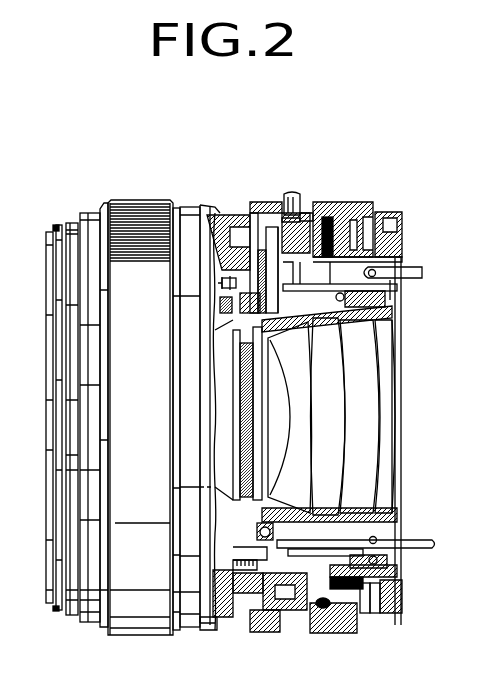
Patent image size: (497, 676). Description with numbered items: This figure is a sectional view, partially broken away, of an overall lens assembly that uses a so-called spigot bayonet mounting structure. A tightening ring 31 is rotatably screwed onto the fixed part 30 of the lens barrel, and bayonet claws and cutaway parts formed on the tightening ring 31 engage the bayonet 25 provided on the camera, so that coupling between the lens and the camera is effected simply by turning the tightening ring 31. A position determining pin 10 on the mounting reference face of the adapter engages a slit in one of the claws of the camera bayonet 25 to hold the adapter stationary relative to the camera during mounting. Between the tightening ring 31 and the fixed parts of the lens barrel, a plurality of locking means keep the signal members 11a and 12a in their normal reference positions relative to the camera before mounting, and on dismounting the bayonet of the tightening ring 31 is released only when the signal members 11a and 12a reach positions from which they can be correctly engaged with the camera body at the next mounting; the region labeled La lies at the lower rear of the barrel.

The fixed part of the lens barrel 30 is at (303, 205).
The tightening ring 31 is at (366, 202).
The position determining pin 10 is at (390, 238).
The signal member 11a is at (422, 273).
The signal member 12a is at (433, 542).
The bayonet of the camera 25 is at (397, 578).
The lens barrel portion La is at (380, 612).